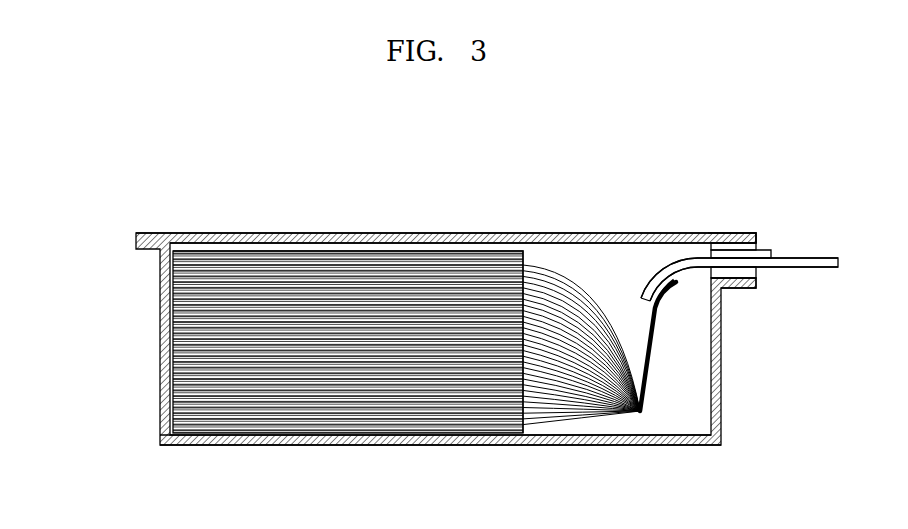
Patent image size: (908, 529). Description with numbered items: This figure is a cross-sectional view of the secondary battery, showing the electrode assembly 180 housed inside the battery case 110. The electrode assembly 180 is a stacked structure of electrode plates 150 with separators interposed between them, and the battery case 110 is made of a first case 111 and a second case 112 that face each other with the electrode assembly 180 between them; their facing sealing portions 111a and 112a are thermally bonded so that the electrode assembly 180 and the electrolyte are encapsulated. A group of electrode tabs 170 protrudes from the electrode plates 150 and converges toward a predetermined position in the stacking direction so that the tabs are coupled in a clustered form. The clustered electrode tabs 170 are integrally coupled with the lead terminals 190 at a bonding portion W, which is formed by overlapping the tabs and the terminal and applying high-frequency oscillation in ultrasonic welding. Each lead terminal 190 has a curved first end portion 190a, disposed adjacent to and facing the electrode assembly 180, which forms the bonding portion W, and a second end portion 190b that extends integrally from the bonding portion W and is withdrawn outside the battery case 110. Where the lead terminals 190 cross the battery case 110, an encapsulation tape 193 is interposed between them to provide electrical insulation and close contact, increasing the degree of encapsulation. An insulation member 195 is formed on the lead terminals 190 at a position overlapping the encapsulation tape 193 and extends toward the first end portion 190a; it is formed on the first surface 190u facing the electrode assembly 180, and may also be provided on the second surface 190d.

The battery case 110 is at (467, 325).
The first case 111 is at (415, 232).
The sealing portion 111a is at (707, 225).
The second case 112 is at (632, 437).
The sealing portion 112a is at (748, 280).
The electrode plates 150 is at (493, 410).
The electrode tabs 170 is at (648, 332).
The electrode assembly 180 is at (348, 378).
The lead terminals 190 is at (745, 261).
The first end portion 190a is at (648, 275).
The second end portion 190b is at (812, 250).
The first surface 190u is at (680, 257).
The second surface 190d is at (677, 263).
The encapsulation tape 193 is at (735, 238).
The insulation member 195 is at (762, 248).
The bonding portion W is at (650, 282).